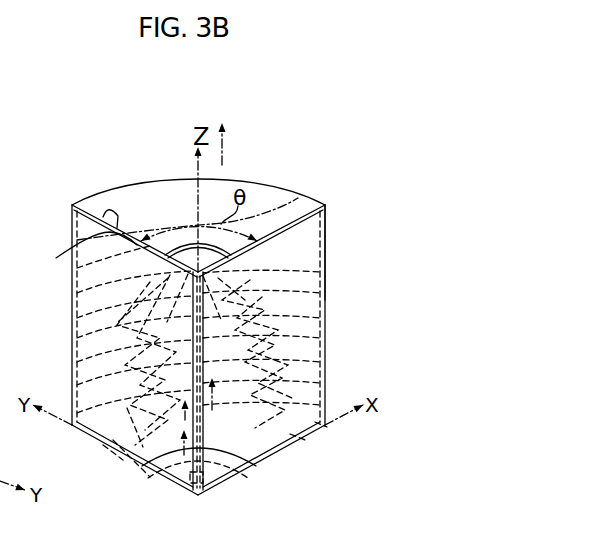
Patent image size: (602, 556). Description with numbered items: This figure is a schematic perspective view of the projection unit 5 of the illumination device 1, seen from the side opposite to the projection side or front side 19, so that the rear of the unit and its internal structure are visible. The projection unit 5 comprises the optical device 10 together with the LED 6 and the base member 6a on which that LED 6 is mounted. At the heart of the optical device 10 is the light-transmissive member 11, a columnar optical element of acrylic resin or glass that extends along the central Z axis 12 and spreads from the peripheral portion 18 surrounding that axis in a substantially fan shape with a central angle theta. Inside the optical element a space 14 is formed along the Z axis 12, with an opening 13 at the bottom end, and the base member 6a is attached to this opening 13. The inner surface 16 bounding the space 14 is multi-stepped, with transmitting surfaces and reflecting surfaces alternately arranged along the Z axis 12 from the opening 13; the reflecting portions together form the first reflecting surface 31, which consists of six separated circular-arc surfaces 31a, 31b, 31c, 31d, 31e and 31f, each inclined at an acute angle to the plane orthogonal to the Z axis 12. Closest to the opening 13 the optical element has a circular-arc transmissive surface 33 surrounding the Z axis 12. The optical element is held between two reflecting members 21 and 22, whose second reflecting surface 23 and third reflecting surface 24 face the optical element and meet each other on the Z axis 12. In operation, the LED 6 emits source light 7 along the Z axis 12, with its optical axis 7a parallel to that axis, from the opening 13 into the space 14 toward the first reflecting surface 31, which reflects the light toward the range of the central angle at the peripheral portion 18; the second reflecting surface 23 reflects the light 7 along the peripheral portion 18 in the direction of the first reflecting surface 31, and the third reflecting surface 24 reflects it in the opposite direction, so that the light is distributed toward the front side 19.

The illumination device 1 is at (303, 175).
The projection unit 5 is at (285, 168).
The LED 6 is at (223, 481).
The base member 6a is at (183, 469).
The source light 7 is at (150, 465).
The optical axis 7a is at (208, 423).
The optical device 10 is at (114, 165).
The light-transmissive member 11 is at (102, 202).
The Z axis 12 is at (200, 170).
The opening 13 is at (213, 468).
The space 14 is at (327, 427).
The inner surface 16 is at (100, 441).
The peripheral portion 18 is at (298, 198).
The front side 19 is at (225, 143).
The reflecting member 21 is at (272, 229).
The reflecting member 22 is at (115, 241).
The second reflecting surface 23 is at (270, 223).
The third reflecting surface 24 is at (103, 217).
The first reflecting surface 31 is at (377, 262).
The fourth reflecting surface 31a is at (322, 272).
The fifth reflecting surface 31b is at (322, 293).
The sixth reflecting surface 31c is at (322, 318).
The seventh reflecting surface 31d is at (322, 338).
The eighth reflecting surface 31e is at (322, 362).
The ninth reflecting surface 31f is at (322, 383).
The transmissive surface 33 is at (305, 440).